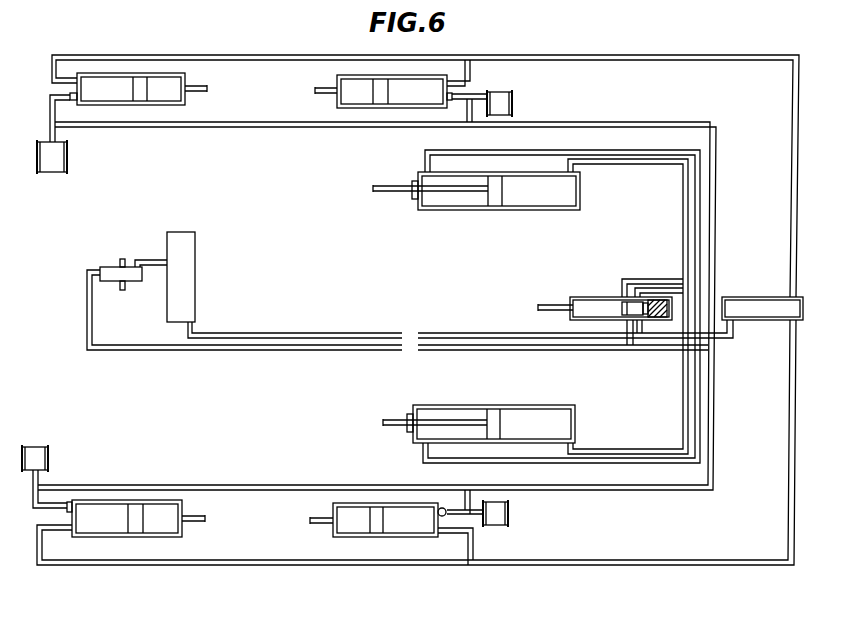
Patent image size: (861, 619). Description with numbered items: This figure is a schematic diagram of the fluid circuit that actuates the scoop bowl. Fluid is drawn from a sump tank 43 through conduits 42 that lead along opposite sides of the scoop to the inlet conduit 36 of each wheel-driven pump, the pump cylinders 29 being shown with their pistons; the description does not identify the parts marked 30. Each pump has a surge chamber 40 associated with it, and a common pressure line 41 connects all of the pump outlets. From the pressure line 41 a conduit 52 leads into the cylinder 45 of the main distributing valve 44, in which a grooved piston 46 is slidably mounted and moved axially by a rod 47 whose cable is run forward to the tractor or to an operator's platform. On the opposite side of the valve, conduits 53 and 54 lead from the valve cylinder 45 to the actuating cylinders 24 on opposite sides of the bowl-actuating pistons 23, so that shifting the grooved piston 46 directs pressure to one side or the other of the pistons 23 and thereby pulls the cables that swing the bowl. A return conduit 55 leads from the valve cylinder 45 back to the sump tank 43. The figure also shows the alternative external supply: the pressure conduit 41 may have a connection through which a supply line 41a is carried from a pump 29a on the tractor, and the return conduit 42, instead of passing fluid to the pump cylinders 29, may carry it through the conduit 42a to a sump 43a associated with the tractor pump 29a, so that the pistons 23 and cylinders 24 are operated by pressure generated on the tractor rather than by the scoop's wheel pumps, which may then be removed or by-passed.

The piston 23 is at (495, 200).
The cylinder 24 is at (557, 208).
The pump cylinder 29 is at (118, 106).
The pump on the tractor 29a is at (108, 265).
The piston 30 is at (143, 97).
The conduit 36 is at (42, 545).
The surge chamber 40 is at (68, 158).
The common pressure line 41 is at (714, 415).
The supply line 41a is at (442, 351).
The conduit 42 is at (792, 220).
The conduit 42a is at (343, 332).
The sump tank 43 is at (762, 321).
The sump 43a is at (188, 280).
The main distributing valve 44 is at (589, 319).
The cylinder 45 is at (612, 319).
The grooved piston 46 is at (625, 301).
The rod 47 is at (544, 304).
The conduit 52 is at (646, 352).
The conduit 53 is at (633, 276).
The conduit 54 is at (648, 286).
The return conduit 55 is at (670, 343).